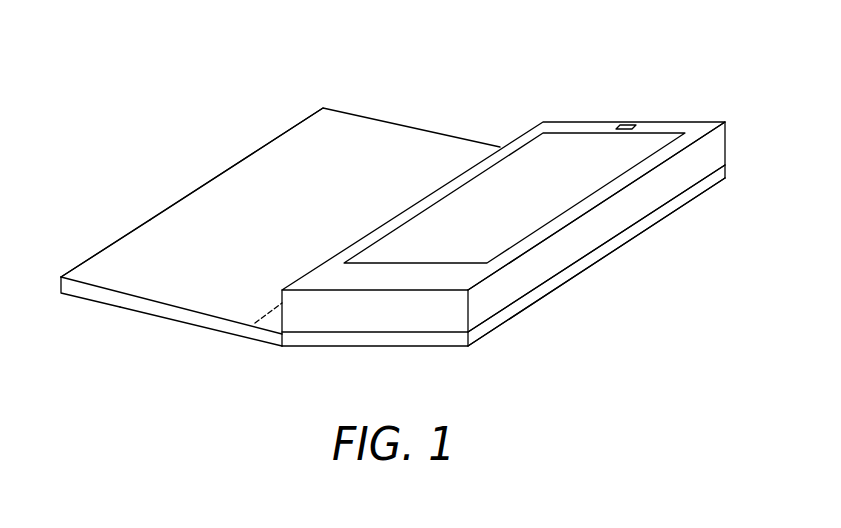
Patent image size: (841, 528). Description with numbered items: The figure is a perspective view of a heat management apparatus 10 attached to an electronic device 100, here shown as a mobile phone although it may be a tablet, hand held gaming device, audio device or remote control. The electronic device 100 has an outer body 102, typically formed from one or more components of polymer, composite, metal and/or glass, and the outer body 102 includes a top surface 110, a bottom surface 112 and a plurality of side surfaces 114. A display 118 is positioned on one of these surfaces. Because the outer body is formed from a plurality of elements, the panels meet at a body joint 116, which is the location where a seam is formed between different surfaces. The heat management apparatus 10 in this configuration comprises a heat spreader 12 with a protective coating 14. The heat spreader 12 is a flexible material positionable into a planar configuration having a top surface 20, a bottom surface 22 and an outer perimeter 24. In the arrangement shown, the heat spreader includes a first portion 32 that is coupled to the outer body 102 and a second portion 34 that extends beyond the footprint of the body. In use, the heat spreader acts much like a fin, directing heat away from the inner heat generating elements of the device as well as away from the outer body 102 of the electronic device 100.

The heat management apparatus 10 is at (360, 86).
The heat spreader 12 is at (273, 139).
The protective coating 14 is at (237, 175).
The top surface 20 is at (118, 255).
The bottom surface 22 is at (138, 310).
The outer perimeter 24 is at (205, 322).
The first portion 32 is at (359, 347).
The second portion 34 is at (90, 288).
The electronic device 100 is at (714, 86).
The outer body 102 is at (718, 146).
The top surface 110 is at (562, 127).
The bottom surface 112 is at (430, 335).
The side surfaces 114 is at (598, 222).
The body joint 116 is at (542, 242).
The display 118 is at (650, 138).